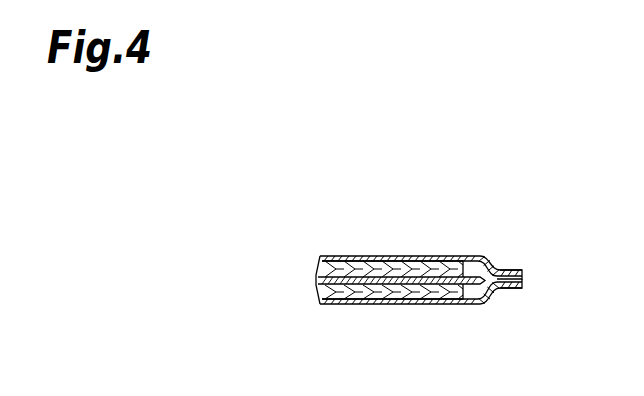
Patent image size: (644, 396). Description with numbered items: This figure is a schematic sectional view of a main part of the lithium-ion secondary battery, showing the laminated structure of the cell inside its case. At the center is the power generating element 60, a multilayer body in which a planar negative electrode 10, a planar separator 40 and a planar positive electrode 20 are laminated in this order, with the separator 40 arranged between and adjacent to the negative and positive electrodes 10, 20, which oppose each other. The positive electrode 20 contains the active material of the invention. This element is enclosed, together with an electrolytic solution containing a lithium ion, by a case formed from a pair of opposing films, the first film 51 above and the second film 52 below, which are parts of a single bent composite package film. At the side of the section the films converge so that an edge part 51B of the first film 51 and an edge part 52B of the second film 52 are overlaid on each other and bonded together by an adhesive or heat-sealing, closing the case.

The negative electrode 10 is at (318, 266).
The positive electrode 20 is at (318, 296).
The separator 40 is at (318, 281).
The first film 51 is at (396, 256).
The edge part of the first film 51B is at (506, 270).
The second film 52 is at (395, 304).
The edge part of the second film 52B is at (507, 288).
The power generating element 60 is at (258, 233).